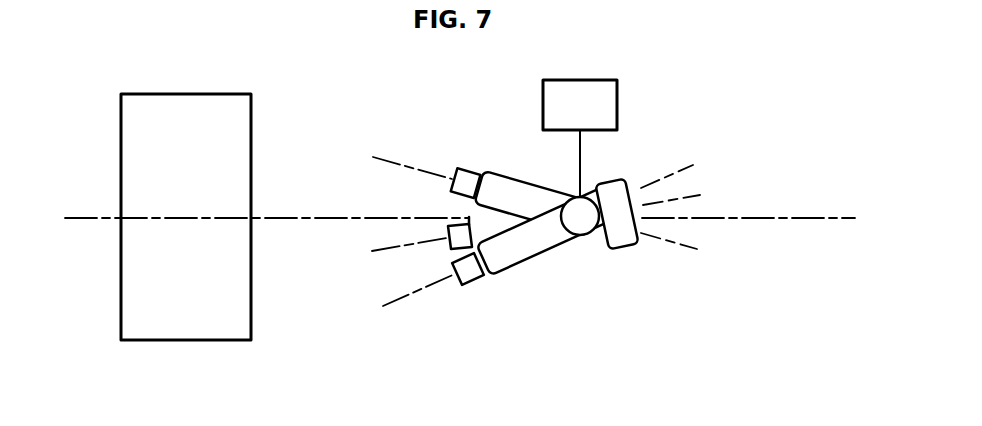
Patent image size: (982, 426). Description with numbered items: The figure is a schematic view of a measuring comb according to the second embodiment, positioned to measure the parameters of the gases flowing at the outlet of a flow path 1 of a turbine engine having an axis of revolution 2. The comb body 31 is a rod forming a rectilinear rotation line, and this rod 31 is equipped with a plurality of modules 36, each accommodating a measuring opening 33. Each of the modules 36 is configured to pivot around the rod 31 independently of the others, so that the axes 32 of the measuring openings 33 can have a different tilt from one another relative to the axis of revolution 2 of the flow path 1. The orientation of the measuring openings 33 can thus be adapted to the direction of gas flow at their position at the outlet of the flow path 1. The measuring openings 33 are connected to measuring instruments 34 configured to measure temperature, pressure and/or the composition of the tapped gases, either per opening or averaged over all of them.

The flow path 1 is at (180, 205).
The axis of revolution 2 is at (786, 217).
The comb body 31 is at (584, 217).
The axes of the measuring openings 32 is at (674, 173).
The measuring opening 33 is at (466, 180).
The measuring instruments 34 is at (570, 114).
The modules 36 is at (524, 196).